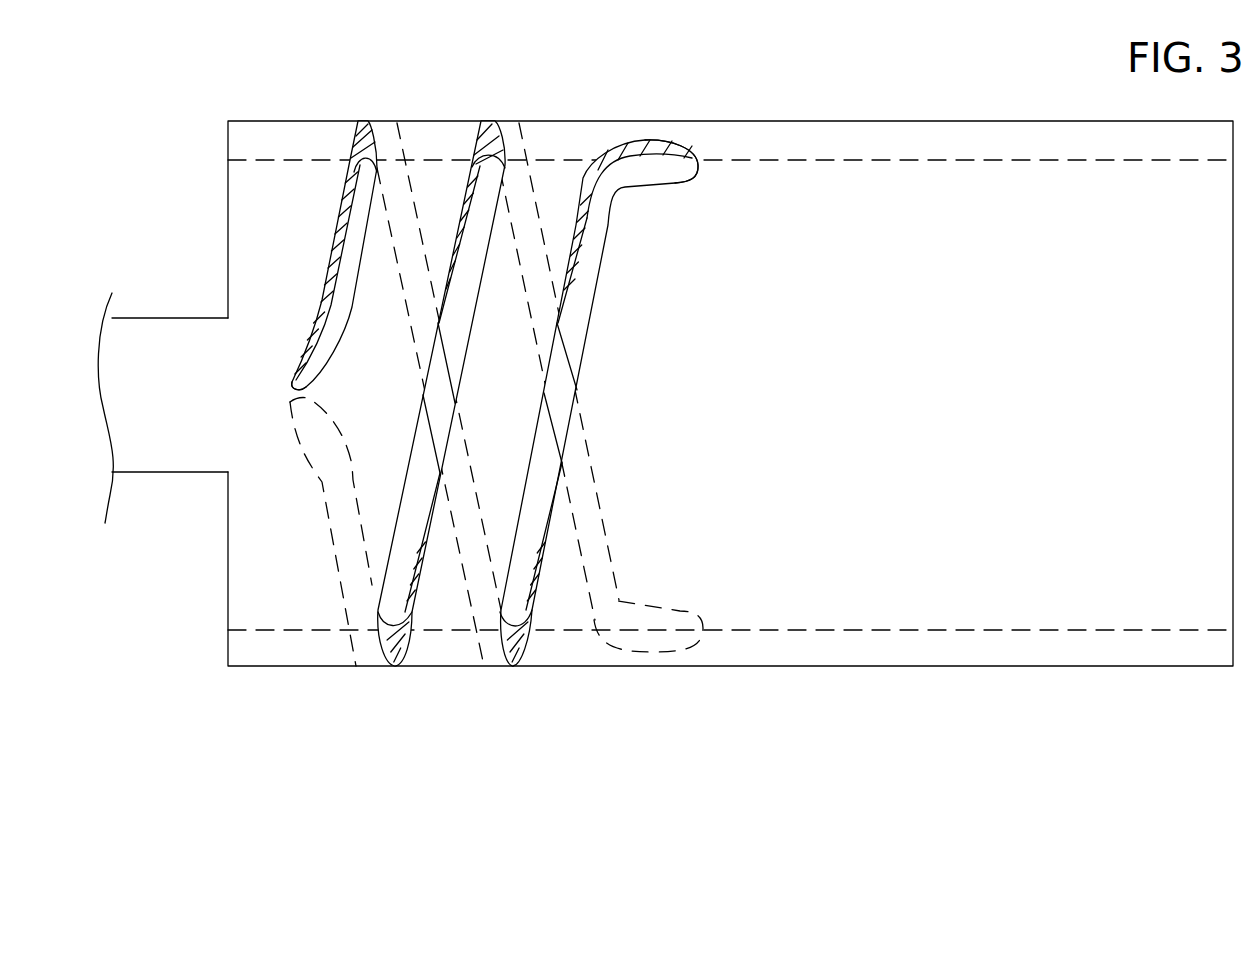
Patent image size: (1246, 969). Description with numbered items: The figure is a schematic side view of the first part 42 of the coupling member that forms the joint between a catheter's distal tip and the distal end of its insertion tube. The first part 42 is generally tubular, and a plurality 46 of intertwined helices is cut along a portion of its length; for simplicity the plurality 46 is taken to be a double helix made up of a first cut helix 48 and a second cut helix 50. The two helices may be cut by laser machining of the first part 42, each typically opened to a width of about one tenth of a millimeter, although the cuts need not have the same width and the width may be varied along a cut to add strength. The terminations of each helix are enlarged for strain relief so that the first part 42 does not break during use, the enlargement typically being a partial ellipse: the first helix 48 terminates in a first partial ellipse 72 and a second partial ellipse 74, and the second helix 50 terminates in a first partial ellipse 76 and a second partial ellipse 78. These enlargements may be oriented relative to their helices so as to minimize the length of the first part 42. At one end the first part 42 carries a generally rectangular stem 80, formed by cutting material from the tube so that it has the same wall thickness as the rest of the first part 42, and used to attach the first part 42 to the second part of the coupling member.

The first part 42 is at (1010, 667).
The plurality of intertwined helices 46 is at (499, 453).
The first cut helix 48 is at (594, 485).
The second cut helix 50 is at (328, 272).
The first partial ellipse 72 is at (302, 436).
The second partial ellipse 74 is at (680, 610).
The first partial ellipse 76 is at (292, 372).
The second partial ellipse 78 is at (693, 180).
The stem 80 is at (162, 472).